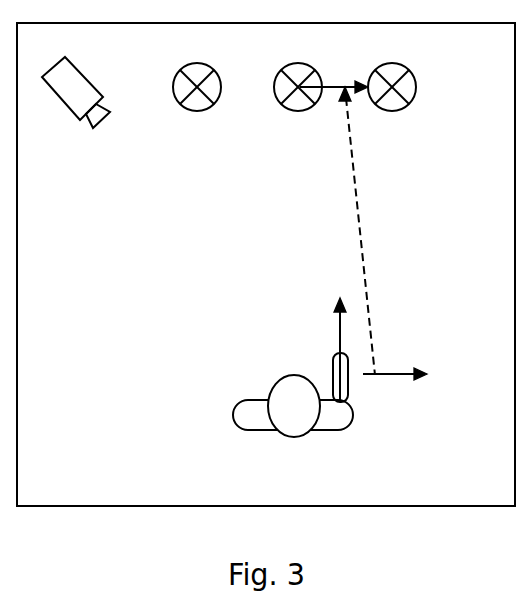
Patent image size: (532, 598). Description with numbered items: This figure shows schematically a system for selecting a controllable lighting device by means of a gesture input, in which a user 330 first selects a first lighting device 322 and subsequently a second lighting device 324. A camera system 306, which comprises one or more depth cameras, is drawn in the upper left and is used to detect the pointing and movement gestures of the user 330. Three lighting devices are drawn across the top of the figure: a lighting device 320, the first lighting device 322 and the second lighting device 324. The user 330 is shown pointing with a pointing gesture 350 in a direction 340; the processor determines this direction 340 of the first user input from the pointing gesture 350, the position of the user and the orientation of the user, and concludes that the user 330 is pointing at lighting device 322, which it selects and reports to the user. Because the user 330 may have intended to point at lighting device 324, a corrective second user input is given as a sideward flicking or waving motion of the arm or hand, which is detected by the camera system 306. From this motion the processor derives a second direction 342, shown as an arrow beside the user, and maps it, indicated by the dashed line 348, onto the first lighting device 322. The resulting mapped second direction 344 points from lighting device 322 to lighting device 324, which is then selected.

The camera system 306 is at (70, 100).
The light source 320 is at (195, 112).
The first lighting device 322 is at (293, 112).
The second lighting device 324 is at (398, 112).
The user 330 is at (253, 415).
The direction 340 is at (340, 332).
The second direction 342 is at (393, 382).
The mapped second direction 344 is at (328, 88).
The mapping 348 is at (370, 265).
The pointing gesture 350 is at (332, 367).